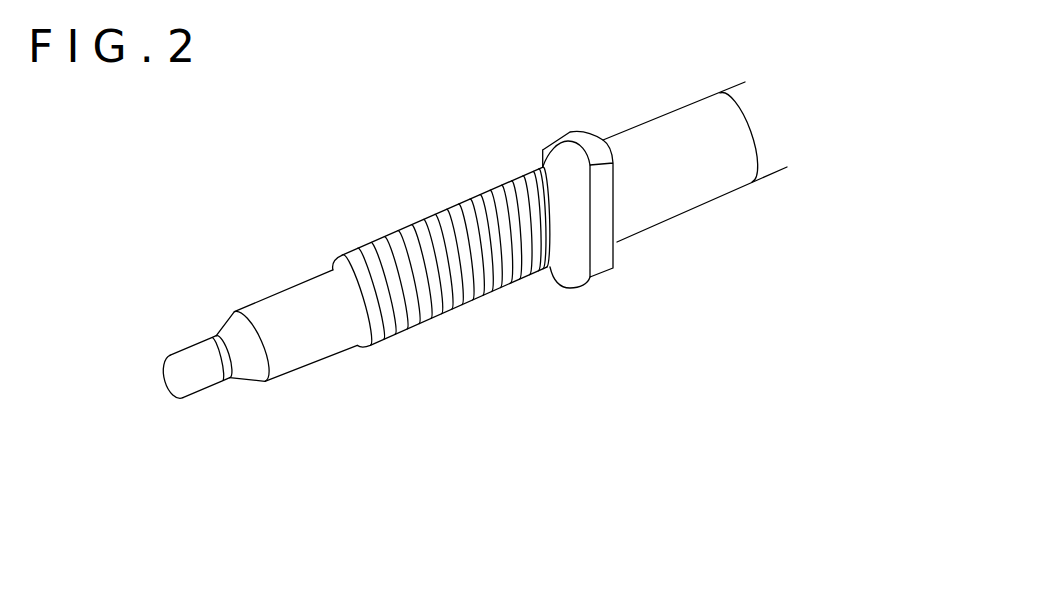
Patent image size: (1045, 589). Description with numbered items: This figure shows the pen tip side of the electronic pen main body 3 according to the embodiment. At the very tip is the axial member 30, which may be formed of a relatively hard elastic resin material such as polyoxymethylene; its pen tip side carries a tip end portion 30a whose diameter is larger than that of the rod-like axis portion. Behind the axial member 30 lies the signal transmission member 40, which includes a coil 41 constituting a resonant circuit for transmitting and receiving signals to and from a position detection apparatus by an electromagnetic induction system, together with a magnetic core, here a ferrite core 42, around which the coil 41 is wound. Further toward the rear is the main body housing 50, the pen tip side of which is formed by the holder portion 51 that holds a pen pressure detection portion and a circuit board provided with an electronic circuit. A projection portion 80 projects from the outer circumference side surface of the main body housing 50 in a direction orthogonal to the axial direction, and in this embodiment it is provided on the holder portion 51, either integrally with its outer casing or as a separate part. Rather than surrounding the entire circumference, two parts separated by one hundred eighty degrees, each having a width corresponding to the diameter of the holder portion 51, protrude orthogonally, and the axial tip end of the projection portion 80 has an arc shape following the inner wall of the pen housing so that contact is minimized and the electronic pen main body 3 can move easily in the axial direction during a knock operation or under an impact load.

The electronic pen main body 3 is at (517, 146).
The axial member 30 is at (203, 414).
The tip end portion 30a is at (175, 373).
The signal transmission member 40 is at (470, 398).
The coil 41 is at (440, 303).
The ferrite core 42 is at (341, 339).
The main body housing 50 is at (692, 84).
The holder portion 51 is at (693, 188).
The projection portion 80 is at (582, 143).